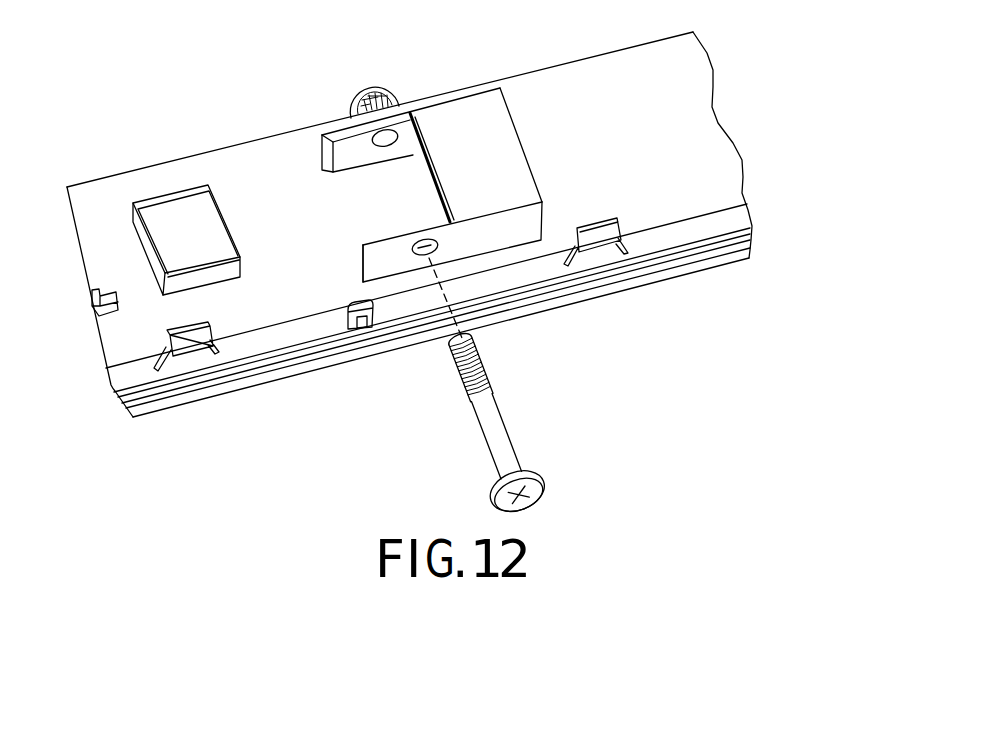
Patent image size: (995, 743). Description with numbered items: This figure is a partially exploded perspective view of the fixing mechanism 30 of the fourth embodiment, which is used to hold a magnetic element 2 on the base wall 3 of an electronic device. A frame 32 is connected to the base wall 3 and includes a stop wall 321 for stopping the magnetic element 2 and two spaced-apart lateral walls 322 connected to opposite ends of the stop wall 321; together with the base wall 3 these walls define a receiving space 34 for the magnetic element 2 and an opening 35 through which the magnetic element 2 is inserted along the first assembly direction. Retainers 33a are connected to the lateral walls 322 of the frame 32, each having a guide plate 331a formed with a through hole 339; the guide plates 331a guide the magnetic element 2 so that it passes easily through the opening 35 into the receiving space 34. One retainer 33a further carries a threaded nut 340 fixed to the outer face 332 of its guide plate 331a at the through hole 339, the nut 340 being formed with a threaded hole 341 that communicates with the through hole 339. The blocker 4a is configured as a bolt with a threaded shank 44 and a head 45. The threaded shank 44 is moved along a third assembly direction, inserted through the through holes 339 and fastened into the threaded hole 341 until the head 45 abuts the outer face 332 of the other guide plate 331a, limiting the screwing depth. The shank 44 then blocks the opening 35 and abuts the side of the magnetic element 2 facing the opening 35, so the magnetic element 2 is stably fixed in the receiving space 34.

The magnetic element 2 is at (181, 210).
The base wall 3 is at (102, 181).
The fixing mechanism 30 is at (215, 141).
The frame 32 is at (518, 222).
The stop wall 321 is at (512, 117).
The lateral walls 322 is at (507, 232).
The retainers 33a is at (337, 127).
The guide plates 331a is at (343, 153).
The outer face 332 is at (322, 134).
The through hole 339 is at (383, 142).
The receiving space 34 is at (418, 203).
The opening 35 is at (428, 150).
The threaded nut 340 is at (372, 100).
The threaded hole 341 is at (386, 107).
The blocker 4a is at (527, 388).
The threaded shank 44 is at (494, 400).
The head 45 is at (541, 492).